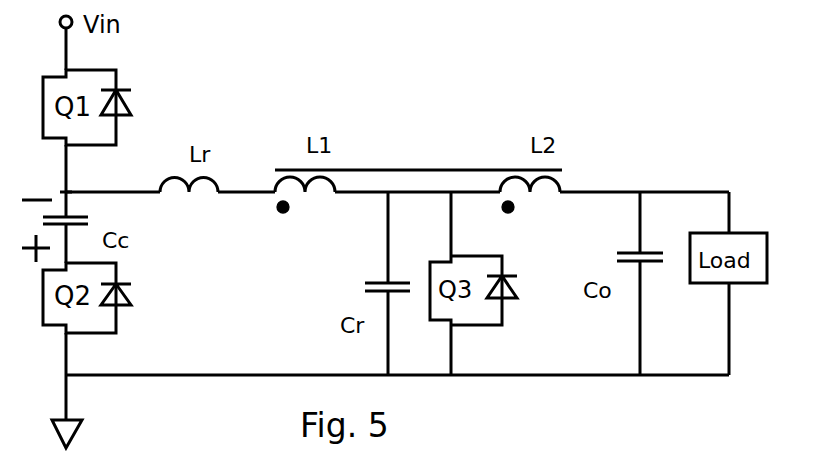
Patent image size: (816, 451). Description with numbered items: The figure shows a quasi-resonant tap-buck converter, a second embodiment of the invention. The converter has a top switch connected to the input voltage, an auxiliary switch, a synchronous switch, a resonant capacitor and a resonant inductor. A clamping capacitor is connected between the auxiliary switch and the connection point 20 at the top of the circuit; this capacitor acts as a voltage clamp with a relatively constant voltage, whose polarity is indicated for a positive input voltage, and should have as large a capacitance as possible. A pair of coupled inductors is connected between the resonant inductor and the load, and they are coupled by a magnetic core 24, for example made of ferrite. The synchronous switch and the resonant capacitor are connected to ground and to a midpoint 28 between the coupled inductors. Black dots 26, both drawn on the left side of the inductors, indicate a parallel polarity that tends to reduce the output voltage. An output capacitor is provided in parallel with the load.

The connection point 20 is at (67, 190).
The magnetic core 24 is at (413, 168).
The black dots 26 is at (289, 212).
The midpoint 28 is at (418, 196).